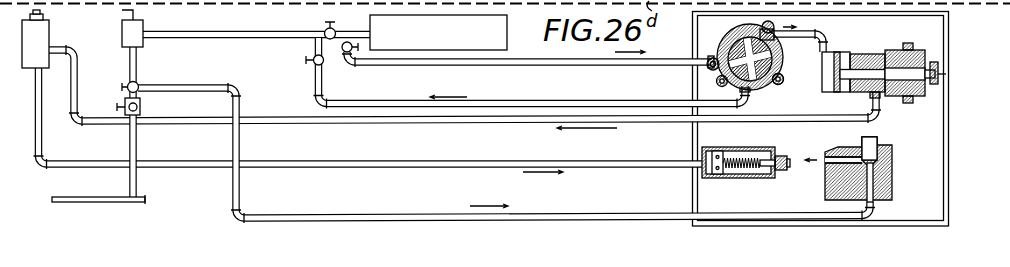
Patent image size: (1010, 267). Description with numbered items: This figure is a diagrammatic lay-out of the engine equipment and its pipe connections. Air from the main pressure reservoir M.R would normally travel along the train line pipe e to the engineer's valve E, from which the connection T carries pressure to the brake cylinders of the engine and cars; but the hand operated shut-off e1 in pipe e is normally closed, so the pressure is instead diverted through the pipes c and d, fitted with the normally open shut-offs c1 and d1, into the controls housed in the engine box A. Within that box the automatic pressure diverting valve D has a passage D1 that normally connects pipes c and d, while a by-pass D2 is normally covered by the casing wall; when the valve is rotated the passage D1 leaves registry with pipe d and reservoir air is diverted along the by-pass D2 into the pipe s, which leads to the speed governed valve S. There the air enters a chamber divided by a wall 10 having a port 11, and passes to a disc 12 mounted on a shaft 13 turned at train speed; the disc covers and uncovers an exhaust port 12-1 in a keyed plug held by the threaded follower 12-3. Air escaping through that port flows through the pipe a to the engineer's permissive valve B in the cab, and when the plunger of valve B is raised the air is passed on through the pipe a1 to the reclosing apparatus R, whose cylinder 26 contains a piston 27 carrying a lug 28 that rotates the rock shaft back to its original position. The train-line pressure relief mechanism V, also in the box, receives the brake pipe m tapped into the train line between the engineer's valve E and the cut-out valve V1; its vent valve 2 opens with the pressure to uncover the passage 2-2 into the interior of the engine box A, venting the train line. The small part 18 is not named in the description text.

The engine box housing A is at (950, 33).
The engineer's permissive valve B is at (42, 32).
The engineer's valve E is at (140, 30).
The main pressure reservoir M.R is at (438, 32).
The automatic pressure diverting valve D is at (745, 63).
The main passage of valve D D1 is at (736, 41).
The by-pass of valve D D2 is at (781, 60).
The speed governed valve S is at (896, 60).
The pipe to speed governed valve s is at (815, 33).
The reclosing apparatus R is at (759, 174).
The train-line pressure relief mechanism V is at (139, 85).
The cut-out valve V1 is at (141, 107).
The connection to brake cylinders T is at (107, 202).
The pipe a is at (517, 124).
The pipe a1 is at (33, 108).
The pipe c is at (517, 62).
The hand operated shut-off c1 is at (350, 40).
The pipe d is at (538, 100).
The hand operated shut-off d1 is at (312, 57).
The train line pipe e is at (235, 32).
The hand operated shut-off e1 is at (325, 30).
The brake pipe m is at (415, 215).
The vent valve 2 is at (878, 145).
The vent passage 2-2 is at (845, 157).
The dividing wall 10 is at (837, 52).
The port in wall 11 is at (822, 90).
The disc valve 12 is at (851, 53).
The exhaust port 12-1 is at (864, 92).
The threaded follower 12-3 is at (899, 102).
The shaft 13 is at (905, 72).
The rod end 18 is at (934, 62).
The cylinder 26 is at (736, 151).
The piston 27 is at (720, 152).
The lug 28 is at (783, 170).